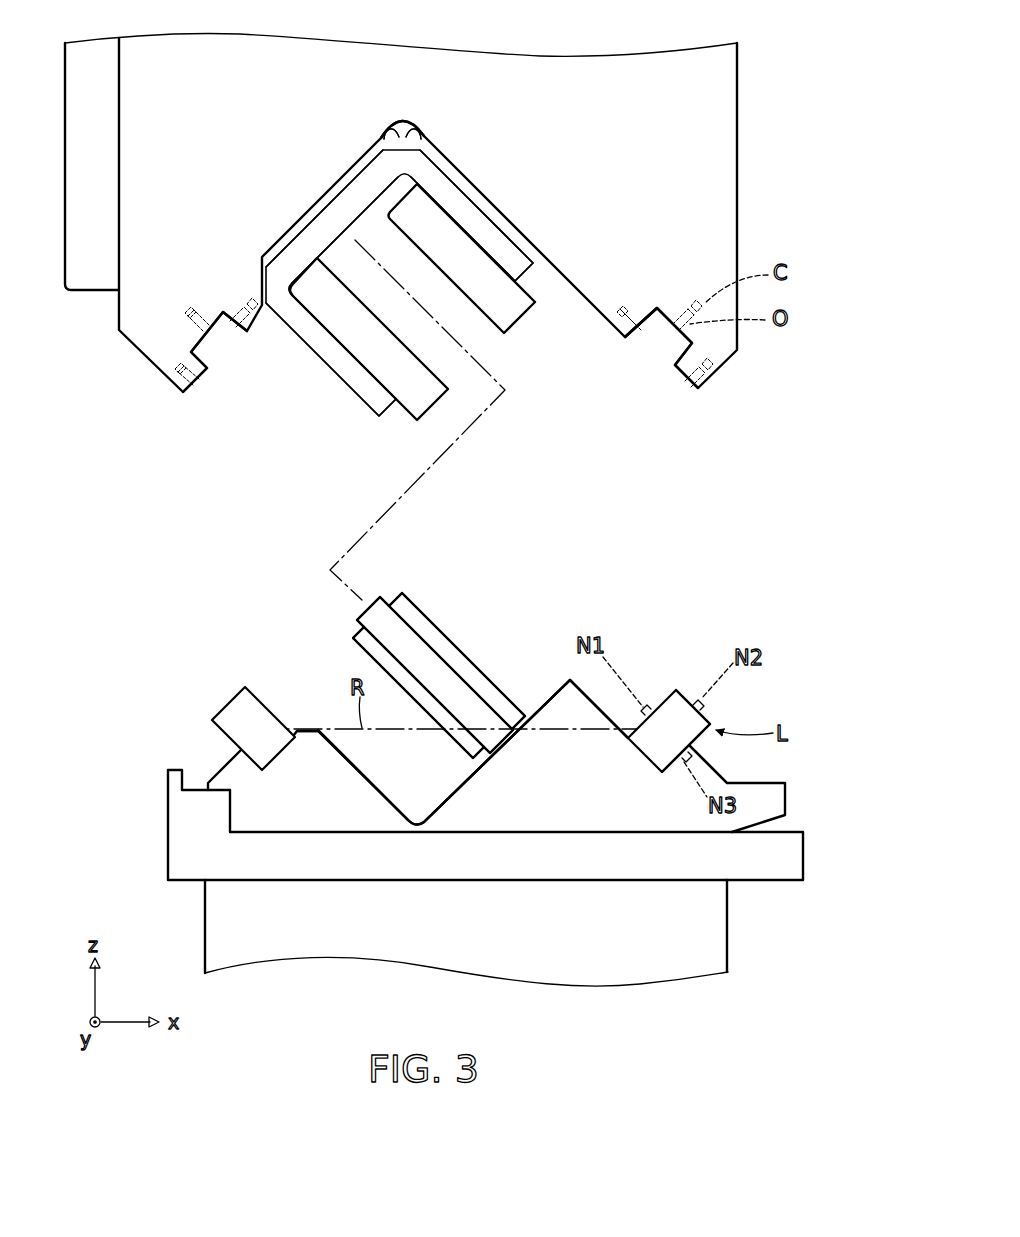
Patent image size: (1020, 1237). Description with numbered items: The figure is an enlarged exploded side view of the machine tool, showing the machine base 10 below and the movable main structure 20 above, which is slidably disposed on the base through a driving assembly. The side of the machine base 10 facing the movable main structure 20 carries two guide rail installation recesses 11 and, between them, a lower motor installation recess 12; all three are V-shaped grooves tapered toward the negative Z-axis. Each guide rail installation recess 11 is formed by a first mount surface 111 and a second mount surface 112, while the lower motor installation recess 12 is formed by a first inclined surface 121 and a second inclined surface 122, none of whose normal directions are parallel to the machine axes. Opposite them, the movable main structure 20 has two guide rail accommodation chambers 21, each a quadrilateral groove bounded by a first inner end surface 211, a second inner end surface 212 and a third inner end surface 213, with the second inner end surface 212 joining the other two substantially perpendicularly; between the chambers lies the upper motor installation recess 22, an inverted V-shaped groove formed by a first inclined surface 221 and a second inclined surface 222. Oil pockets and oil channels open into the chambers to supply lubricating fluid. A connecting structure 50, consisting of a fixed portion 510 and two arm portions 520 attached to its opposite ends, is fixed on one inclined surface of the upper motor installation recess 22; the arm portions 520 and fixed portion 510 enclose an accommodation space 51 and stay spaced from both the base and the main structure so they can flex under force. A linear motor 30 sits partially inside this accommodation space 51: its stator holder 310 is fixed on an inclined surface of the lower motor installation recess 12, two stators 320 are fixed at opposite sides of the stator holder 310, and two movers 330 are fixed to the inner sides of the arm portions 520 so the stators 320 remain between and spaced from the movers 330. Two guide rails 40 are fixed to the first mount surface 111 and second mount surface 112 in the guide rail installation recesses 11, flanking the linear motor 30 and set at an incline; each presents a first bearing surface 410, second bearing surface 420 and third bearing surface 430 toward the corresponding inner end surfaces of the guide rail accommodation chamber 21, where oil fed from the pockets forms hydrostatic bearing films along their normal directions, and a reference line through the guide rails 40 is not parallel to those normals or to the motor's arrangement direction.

The machine base 10 is at (162, 858).
The guide rail installation recess 11 is at (297, 727).
The lower motor installation recess 12 is at (410, 790).
The movable main structure 20 is at (101, 320).
The guide rail accommodation chamber 21 is at (221, 344).
The upper motor installation recess 22 is at (403, 138).
The linear motor 30 is at (350, 636).
The guide rail 40 is at (238, 713).
The connecting structure 50 is at (307, 110).
The accommodation space 51 is at (303, 286).
The first mount surface 111 is at (650, 738).
The second mount surface 112 is at (667, 748).
The first inclined surface 121 is at (432, 772).
The second inclined surface 122 is at (367, 752).
The first inner end surface 211 is at (633, 339).
The second inner end surface 212 is at (670, 330).
The third inner end surface 213 is at (680, 366).
The first inclined surface 221 is at (386, 136).
The second inclined surface 222 is at (416, 136).
The stator holder 310 is at (410, 648).
The stator 320 is at (478, 686).
The mover 330 is at (512, 312).
The first bearing surface 410 is at (647, 706).
The second bearing surface 420 is at (708, 708).
The third bearing surface 430 is at (694, 742).
The fixed portion 510 is at (340, 210).
The arm portion 520 is at (442, 192).